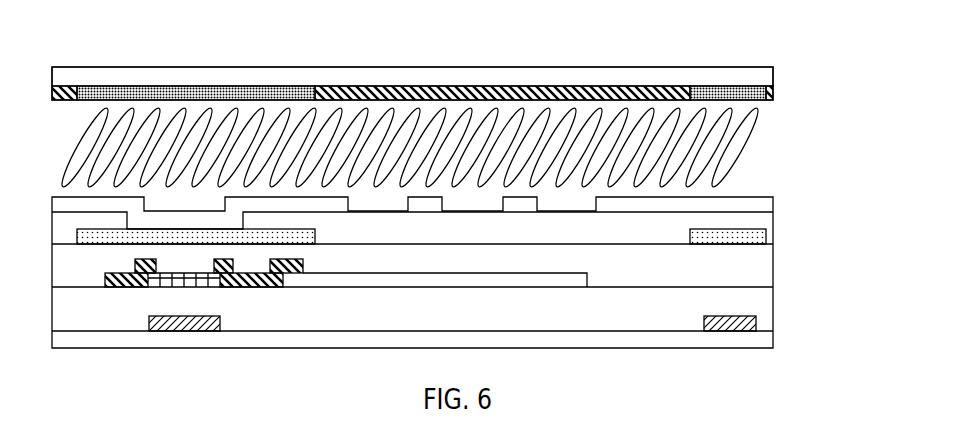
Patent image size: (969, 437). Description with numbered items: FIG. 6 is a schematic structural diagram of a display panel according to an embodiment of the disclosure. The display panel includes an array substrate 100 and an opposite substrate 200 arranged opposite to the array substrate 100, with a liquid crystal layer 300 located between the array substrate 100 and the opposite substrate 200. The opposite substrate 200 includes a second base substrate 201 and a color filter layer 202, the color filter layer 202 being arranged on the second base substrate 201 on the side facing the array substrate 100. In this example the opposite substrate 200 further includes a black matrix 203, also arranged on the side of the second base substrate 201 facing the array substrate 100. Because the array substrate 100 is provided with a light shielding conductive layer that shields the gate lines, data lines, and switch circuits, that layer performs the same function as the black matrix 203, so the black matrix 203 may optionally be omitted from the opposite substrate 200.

The array substrate 100 is at (777, 205).
The opposite substrate 200 is at (437, 67).
The second base substrate 201 is at (398, 76).
The color filter layer 202 is at (481, 95).
The black matrix 203 is at (287, 95).
The liquid crystal layer 300 is at (735, 152).